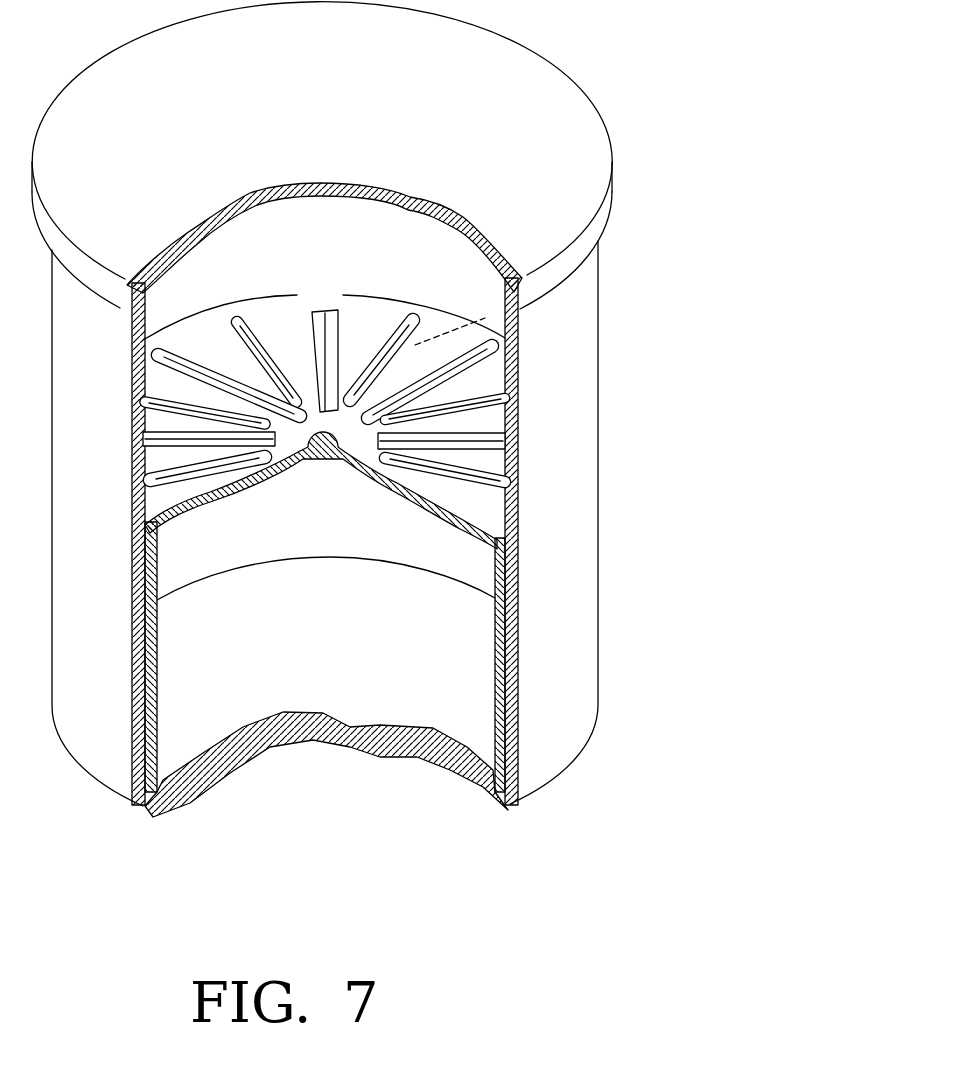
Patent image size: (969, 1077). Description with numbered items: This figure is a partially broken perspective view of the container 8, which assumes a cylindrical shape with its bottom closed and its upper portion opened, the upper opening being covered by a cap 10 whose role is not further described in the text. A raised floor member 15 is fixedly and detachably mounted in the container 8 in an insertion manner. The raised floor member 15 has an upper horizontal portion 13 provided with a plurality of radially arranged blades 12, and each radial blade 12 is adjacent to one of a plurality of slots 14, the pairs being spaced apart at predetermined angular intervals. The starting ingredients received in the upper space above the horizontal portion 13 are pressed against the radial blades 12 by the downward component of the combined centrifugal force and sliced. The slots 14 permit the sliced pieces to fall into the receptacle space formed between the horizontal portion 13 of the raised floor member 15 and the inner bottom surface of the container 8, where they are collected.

The container 8 is at (567, 437).
The cap 10 is at (478, 78).
The radial blade 12 is at (324, 294).
The horizontal portion 13 is at (372, 317).
The slot 14 is at (567, 285).
The raised floor member 15 is at (443, 490).